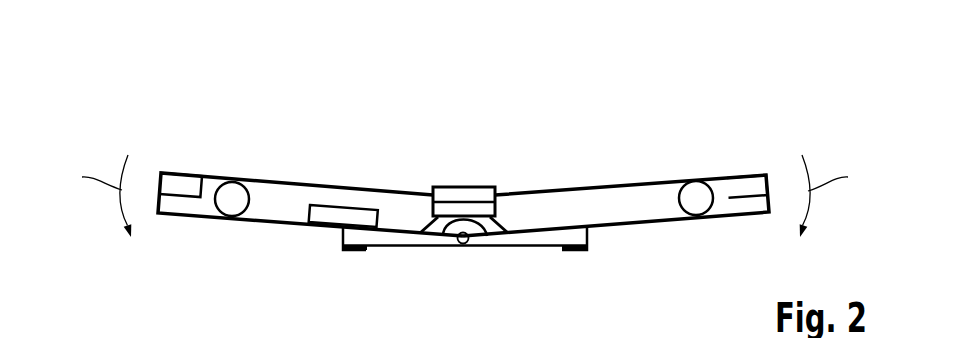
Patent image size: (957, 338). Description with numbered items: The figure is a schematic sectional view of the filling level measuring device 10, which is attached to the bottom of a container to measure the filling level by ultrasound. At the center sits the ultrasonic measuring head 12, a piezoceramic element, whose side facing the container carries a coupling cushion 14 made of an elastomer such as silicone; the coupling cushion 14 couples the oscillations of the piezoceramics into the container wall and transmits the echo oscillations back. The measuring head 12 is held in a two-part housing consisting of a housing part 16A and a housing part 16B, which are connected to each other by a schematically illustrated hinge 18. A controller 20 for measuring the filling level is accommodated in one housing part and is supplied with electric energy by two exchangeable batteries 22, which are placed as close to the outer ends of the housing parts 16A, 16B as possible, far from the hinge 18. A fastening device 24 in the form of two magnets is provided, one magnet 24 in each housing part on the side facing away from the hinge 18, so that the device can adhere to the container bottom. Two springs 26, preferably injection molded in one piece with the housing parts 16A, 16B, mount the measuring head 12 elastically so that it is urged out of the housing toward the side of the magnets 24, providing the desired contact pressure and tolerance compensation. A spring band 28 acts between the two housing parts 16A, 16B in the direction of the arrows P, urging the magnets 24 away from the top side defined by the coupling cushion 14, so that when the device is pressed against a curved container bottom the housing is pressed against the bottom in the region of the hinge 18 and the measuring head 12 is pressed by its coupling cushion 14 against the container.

The filling level measuring device 10 is at (599, 113).
The ultrasonic measuring head 12 is at (470, 205).
The coupling cushion 14 is at (450, 192).
The housing part 16A is at (270, 224).
The housing part 16B is at (641, 224).
The hinge 18 is at (462, 244).
The controller 20 is at (330, 220).
The exchangeable batteries 22 is at (232, 188).
The fastening device (magnets) 24 is at (182, 182).
The springs 26 is at (445, 238).
The spring band 28 is at (540, 249).
The arrows P is at (464, 196).